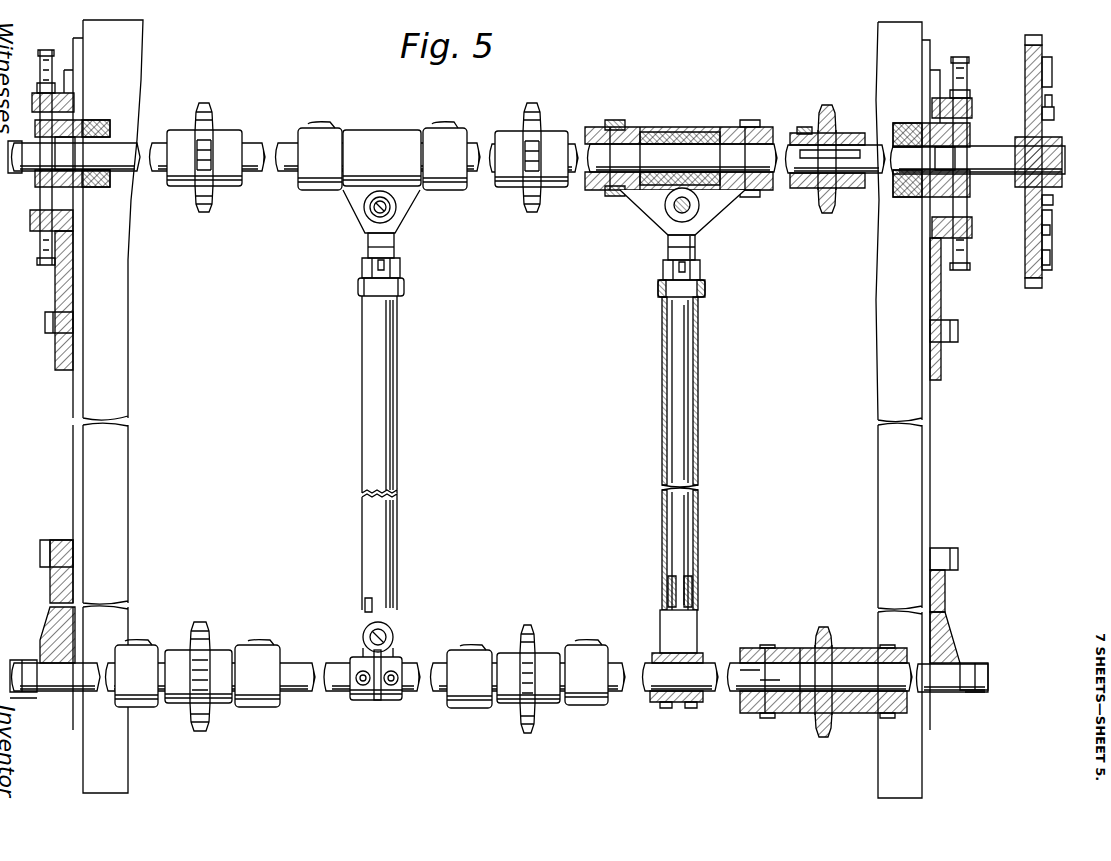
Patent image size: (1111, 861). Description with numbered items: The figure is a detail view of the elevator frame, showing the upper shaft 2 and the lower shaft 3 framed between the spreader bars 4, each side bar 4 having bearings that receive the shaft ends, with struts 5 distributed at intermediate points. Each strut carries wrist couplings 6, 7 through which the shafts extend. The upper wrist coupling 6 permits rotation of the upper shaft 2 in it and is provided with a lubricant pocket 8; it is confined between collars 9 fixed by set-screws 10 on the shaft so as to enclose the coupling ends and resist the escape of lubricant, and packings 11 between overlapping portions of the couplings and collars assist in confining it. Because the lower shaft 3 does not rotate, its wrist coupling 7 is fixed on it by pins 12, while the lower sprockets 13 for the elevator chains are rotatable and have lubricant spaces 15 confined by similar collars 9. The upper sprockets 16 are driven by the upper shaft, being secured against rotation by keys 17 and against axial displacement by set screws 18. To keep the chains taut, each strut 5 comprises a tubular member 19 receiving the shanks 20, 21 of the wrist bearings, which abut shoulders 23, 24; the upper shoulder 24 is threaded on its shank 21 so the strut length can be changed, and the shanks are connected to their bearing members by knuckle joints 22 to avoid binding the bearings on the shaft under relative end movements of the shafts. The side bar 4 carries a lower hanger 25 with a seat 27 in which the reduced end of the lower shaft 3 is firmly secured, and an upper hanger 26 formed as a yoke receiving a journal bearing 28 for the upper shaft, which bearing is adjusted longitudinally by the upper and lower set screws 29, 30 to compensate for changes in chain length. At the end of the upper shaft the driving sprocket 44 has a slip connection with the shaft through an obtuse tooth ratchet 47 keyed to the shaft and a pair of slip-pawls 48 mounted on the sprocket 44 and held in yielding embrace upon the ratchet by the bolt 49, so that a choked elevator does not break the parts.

The upper shaft 2 is at (255, 172).
The lower shaft 3 is at (310, 664).
The spreader bar 4 is at (75, 405).
The strut 5 is at (666, 348).
The wrist coupling 6 is at (378, 145).
The wrist coupling 7 is at (352, 660).
The lubricant pocket 8 is at (660, 135).
The collar 9 is at (325, 190).
The set-screw 10 is at (612, 121).
The packing 11 is at (618, 196).
The pin 12 is at (392, 700).
The lower sprocket 13 is at (202, 652).
The lubricant space 15 is at (808, 662).
The upper sprocket 16 is at (226, 150).
The key 17 is at (806, 190).
The set screw 18 is at (805, 127).
The tubular member 19 is at (378, 403).
The shank 20 is at (680, 585).
The shank 21 is at (396, 250).
The knuckle joint 22 is at (386, 211).
The shoulder 23 is at (670, 598).
The shoulder 24 is at (400, 270).
The hanger 25 is at (75, 608).
The hanger 26 is at (73, 226).
The seat 27 is at (45, 700).
The journal bearing 28 is at (85, 190).
The set screw 29 is at (74, 100).
The set screw 30 is at (38, 200).
The sprocket 44 is at (1035, 40).
The obtuse tooth ratchet 47 is at (1052, 118).
The slip-pawl 48 is at (1052, 76).
The bolt 49 is at (1045, 270).